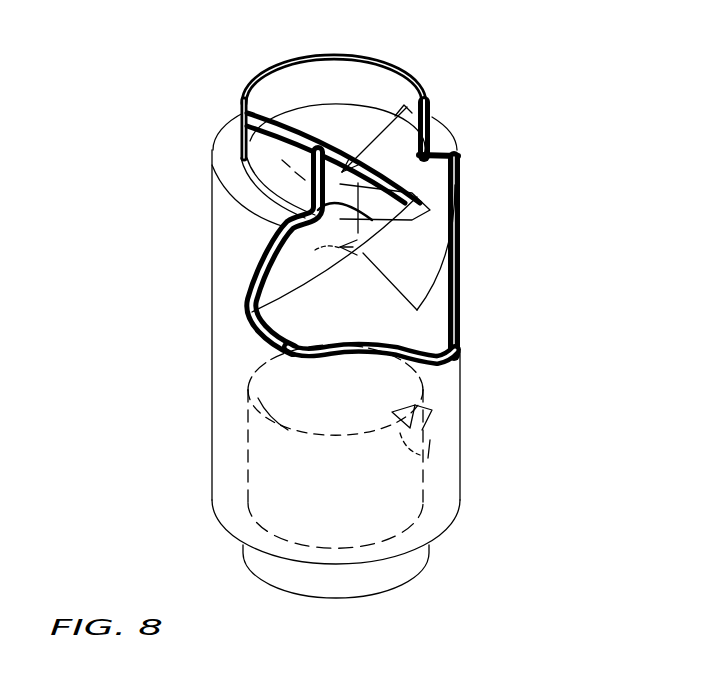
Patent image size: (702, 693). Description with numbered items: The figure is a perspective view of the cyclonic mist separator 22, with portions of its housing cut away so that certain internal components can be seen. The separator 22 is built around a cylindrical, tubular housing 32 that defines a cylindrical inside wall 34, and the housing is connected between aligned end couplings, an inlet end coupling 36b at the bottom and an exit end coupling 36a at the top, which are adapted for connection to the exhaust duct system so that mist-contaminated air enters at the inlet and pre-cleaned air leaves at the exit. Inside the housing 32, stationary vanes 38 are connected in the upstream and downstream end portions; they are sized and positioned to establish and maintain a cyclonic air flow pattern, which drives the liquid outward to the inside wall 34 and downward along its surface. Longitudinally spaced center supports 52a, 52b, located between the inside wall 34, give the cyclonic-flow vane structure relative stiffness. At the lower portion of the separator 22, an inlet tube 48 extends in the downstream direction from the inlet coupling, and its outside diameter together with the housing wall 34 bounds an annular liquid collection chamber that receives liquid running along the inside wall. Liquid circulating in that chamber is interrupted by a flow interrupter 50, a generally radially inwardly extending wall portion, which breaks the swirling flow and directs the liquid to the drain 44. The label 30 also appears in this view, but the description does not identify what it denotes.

The mist separator 22 is at (188, 357).
The cap 30 is at (458, 115).
The housing 32 is at (248, 370).
The inside wall 34 is at (437, 317).
The exit end coupling 36a is at (272, 75).
The inlet end coupling 36b is at (243, 551).
The stationary vanes 38 is at (317, 152).
The drain 44 is at (427, 405).
The inlet tube 48 is at (410, 502).
The flow interrupter 50 is at (437, 457).
The center support 52a is at (340, 181).
The center support 52b is at (287, 227).